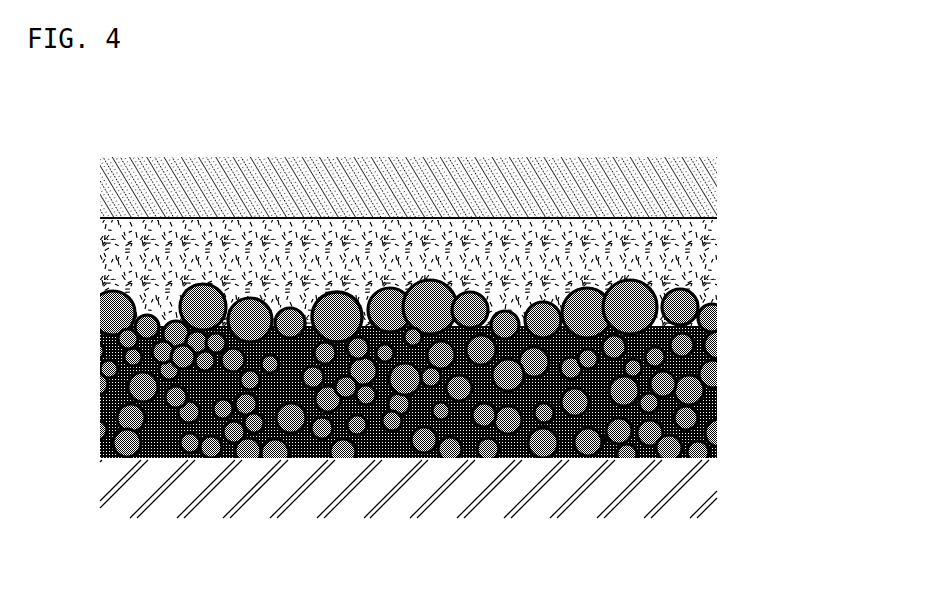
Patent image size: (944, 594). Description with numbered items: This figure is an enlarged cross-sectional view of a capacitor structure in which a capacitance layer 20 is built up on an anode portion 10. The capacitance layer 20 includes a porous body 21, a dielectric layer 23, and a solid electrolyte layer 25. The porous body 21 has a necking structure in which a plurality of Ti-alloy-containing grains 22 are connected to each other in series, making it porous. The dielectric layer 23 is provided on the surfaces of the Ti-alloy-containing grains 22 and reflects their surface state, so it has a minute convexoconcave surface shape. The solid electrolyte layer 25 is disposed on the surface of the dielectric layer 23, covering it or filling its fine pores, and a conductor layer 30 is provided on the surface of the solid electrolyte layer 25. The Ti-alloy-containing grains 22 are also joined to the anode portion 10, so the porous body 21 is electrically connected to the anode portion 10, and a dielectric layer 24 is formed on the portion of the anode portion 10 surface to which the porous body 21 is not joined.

The anode portion 10 is at (700, 486).
The capacitance layer 20 is at (476, 338).
The porous body 21 is at (300, 464).
The Ti-alloy-containing grains 22 is at (178, 440).
The dielectric layer 23 is at (338, 291).
The dielectric layer 24 is at (602, 436).
The solid electrolyte layer 25 is at (700, 249).
The conductor layer 30 is at (705, 187).